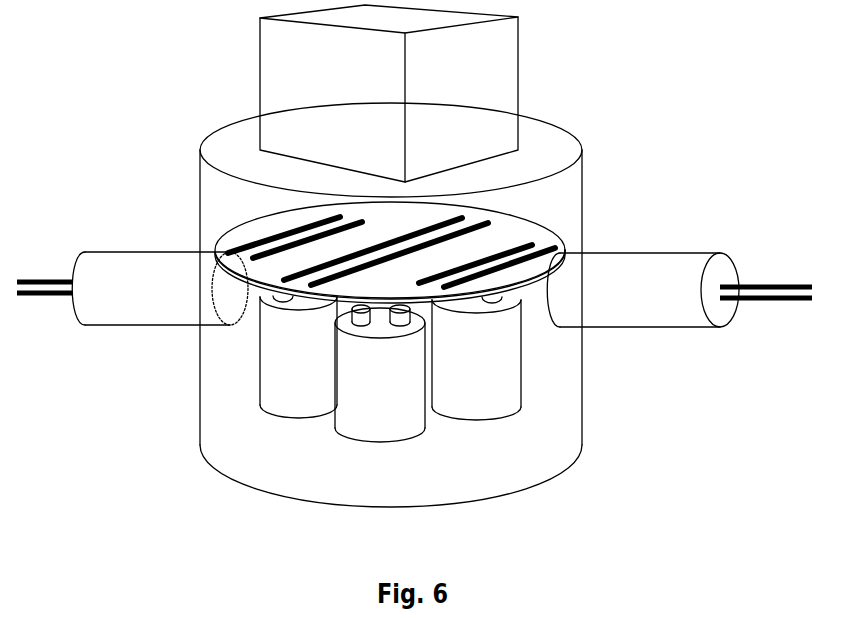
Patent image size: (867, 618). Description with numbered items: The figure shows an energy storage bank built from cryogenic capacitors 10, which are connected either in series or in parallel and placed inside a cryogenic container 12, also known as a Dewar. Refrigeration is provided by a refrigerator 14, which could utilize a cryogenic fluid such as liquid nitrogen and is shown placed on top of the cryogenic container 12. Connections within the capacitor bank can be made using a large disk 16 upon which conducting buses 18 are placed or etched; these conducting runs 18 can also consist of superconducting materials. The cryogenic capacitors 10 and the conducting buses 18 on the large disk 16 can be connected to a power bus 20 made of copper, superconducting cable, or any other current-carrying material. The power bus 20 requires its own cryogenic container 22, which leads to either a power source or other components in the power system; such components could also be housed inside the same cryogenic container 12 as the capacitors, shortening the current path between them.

The cryogenic capacitors 10 is at (393, 415).
The cryogenic container 12 is at (553, 140).
The refrigerator 14 is at (290, 68).
The large disk 16 is at (247, 224).
The conducting buses 18 is at (543, 228).
The power bus 20 is at (35, 298).
The cryogenic container 22 is at (608, 303).